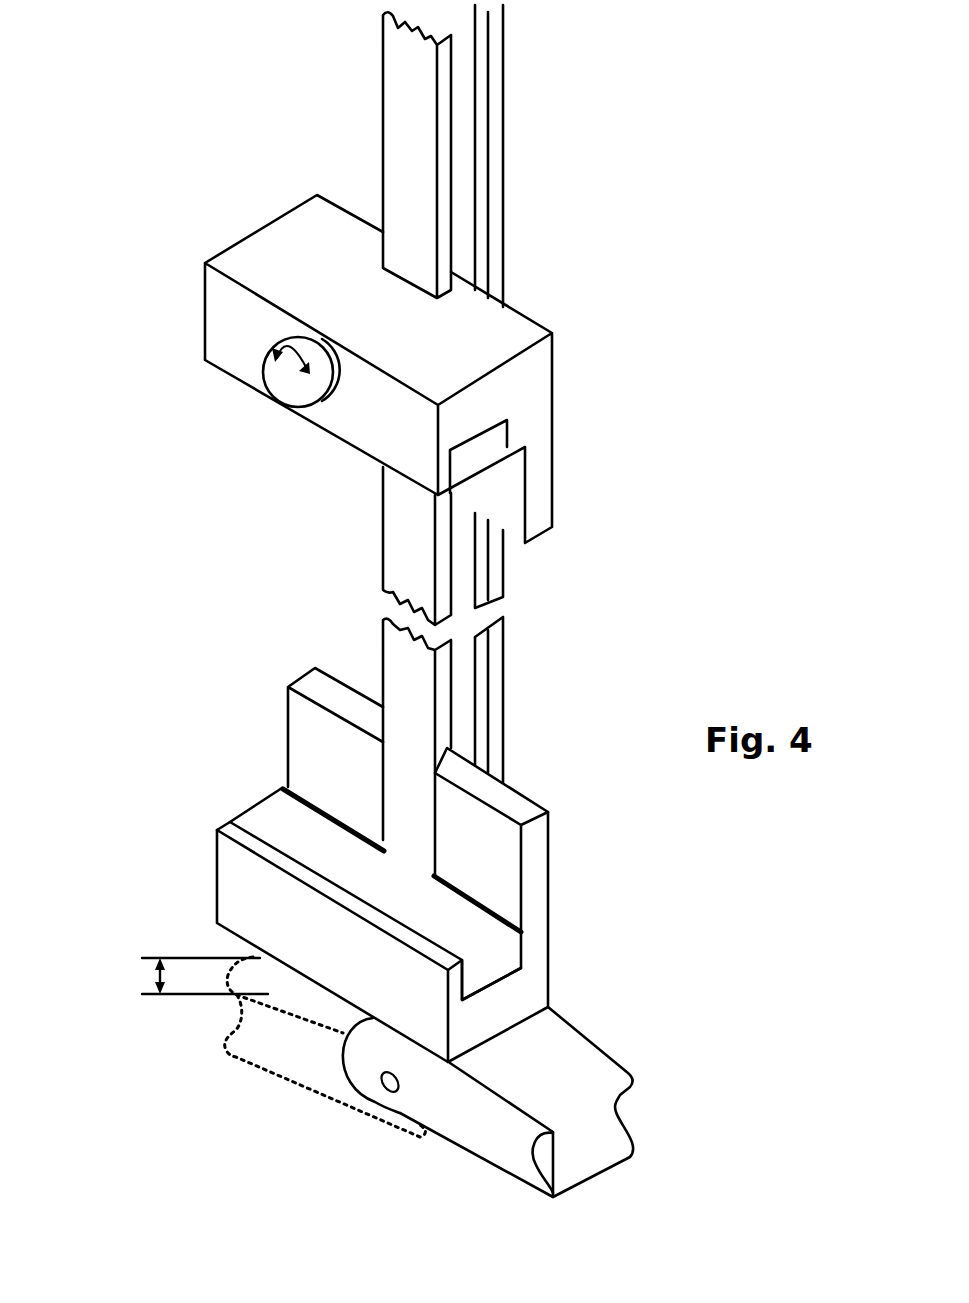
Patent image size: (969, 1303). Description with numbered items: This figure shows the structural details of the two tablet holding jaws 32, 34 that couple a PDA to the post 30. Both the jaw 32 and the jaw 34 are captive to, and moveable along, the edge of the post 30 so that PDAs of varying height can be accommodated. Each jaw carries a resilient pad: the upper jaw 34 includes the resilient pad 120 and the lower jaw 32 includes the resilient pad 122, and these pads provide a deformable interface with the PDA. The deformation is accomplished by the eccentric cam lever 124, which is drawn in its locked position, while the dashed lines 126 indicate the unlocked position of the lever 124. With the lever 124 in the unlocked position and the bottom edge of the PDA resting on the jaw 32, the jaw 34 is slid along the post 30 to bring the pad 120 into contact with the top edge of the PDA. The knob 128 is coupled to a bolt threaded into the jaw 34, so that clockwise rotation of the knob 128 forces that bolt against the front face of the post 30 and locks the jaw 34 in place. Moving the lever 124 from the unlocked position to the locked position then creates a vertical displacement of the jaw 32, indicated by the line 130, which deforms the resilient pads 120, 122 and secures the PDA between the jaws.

The post 30 is at (407, 125).
The jaw 34 is at (280, 248).
The jaw 32 is at (238, 885).
The resilient pad 120 is at (478, 458).
The resilient pad 122 is at (473, 933).
The eccentric cam lever 124 is at (457, 1122).
The dashed lines 126 is at (267, 1035).
The knob 128 is at (283, 385).
The line 130 is at (147, 975).